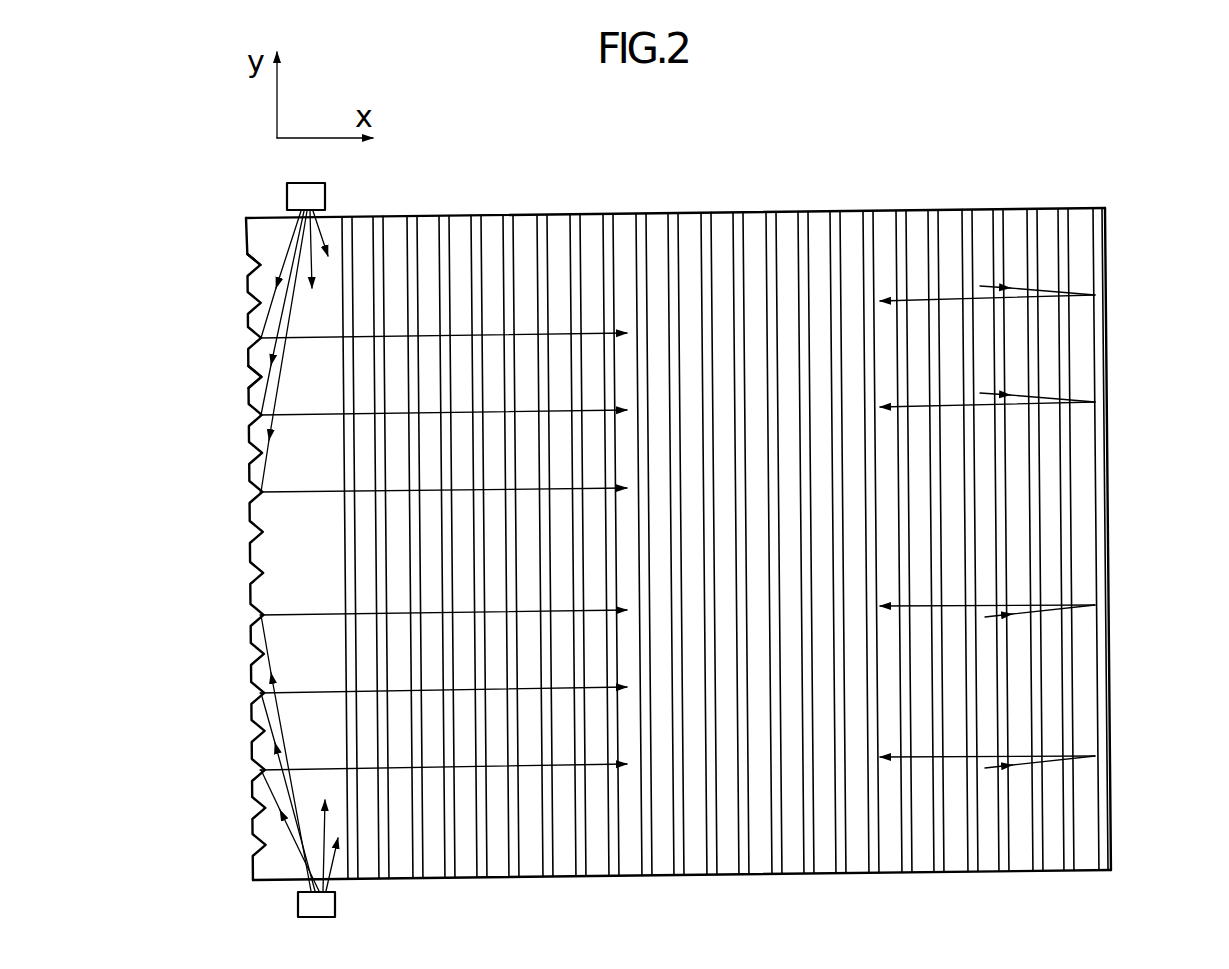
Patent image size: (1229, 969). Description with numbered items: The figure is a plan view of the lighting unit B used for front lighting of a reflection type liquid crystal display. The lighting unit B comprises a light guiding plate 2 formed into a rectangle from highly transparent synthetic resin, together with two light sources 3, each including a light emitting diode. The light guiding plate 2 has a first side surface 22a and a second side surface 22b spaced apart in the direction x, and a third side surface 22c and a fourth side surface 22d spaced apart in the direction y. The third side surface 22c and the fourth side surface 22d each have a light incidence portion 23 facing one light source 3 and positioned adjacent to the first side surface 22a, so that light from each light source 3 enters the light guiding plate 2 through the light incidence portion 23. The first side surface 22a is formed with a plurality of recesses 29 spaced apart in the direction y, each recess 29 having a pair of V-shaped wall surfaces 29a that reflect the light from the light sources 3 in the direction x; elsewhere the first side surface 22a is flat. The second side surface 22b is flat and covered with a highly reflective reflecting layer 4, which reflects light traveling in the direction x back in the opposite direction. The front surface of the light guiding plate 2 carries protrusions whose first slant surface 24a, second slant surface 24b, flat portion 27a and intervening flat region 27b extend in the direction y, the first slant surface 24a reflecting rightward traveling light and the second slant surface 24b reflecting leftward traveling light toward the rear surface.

The light guiding plate 2 is at (627, 198).
The light source 3 is at (302, 542).
The reflecting layer 4 is at (1105, 372).
The first side surface 22a is at (247, 513).
The second side surface 22b is at (1100, 465).
The third side surface 22c is at (752, 208).
The fourth side surface 22d is at (757, 875).
The light incidence portion 23 is at (290, 205).
The first slant surface 24a is at (402, 880).
The second slant surface 24b is at (443, 880).
The flat portion 27a is at (373, 880).
The flat region 27b is at (420, 880).
The recess 29 is at (253, 268).
The wall surface 29a is at (250, 262).
The lighting unit B is at (188, 146).